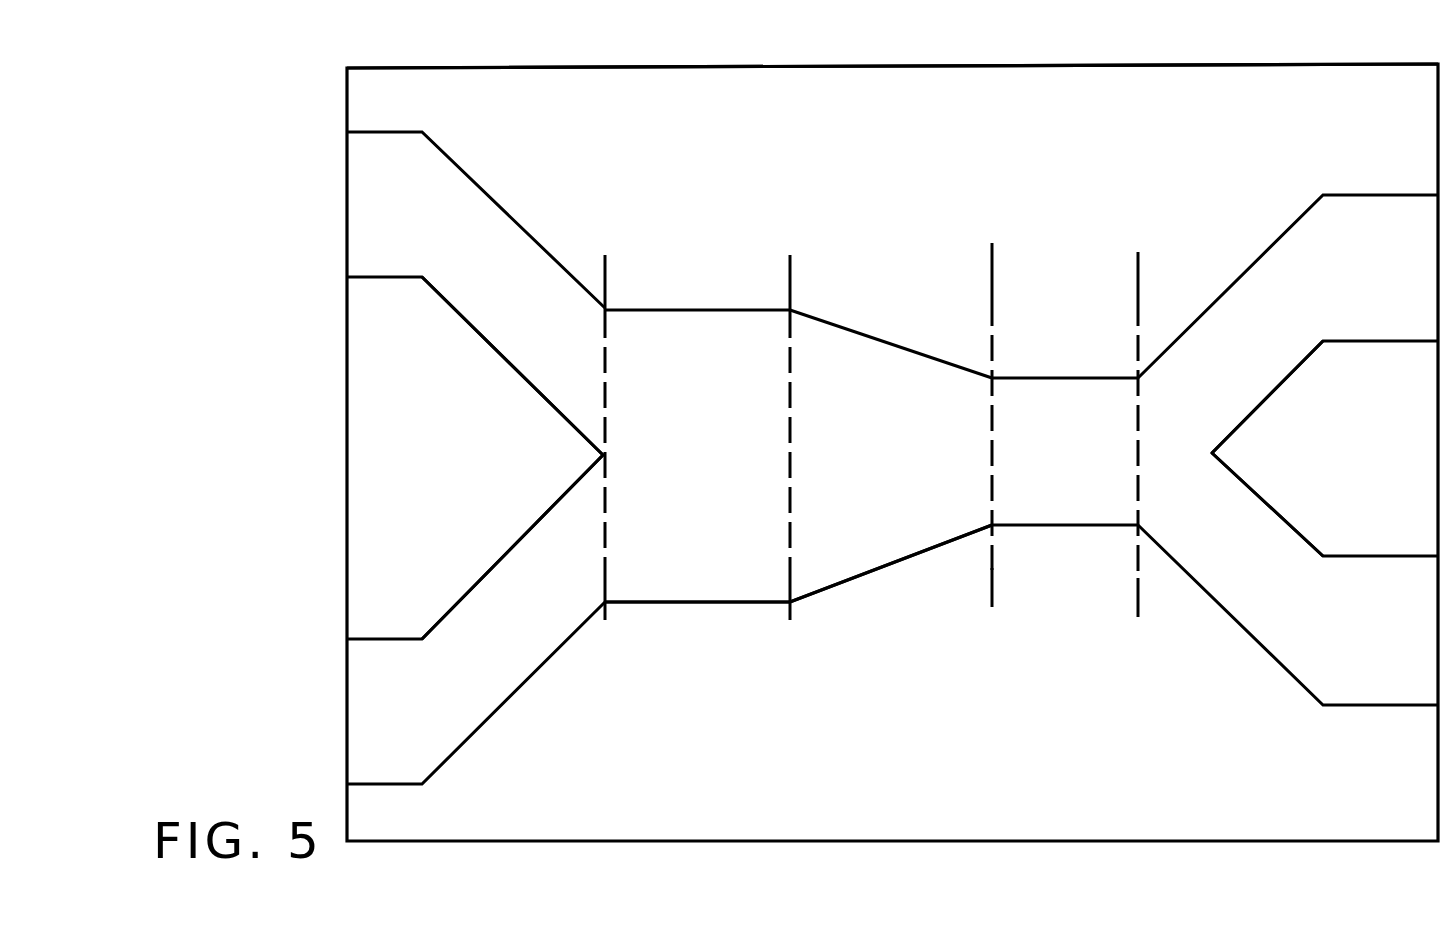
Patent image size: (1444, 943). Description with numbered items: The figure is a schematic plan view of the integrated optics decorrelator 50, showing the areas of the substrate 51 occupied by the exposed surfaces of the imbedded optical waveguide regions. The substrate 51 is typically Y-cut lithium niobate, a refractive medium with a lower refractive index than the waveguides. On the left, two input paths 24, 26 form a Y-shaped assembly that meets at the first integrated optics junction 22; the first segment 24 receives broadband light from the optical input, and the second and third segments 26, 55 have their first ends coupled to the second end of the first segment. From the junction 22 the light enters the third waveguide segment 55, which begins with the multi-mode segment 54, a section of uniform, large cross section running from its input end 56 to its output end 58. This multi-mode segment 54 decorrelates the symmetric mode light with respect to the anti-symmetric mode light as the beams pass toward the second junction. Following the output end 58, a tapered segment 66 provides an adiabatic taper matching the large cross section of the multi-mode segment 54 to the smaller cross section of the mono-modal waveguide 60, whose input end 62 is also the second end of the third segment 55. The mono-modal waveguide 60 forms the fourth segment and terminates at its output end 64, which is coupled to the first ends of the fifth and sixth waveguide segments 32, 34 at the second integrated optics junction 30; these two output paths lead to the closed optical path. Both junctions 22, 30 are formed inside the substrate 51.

The integrated optics decorrelator 50 is at (944, 61).
The substrate 51 is at (1294, 103).
The first integrated optics junction 22 is at (530, 459).
The input path 24 is at (476, 293).
The input path 26 is at (476, 619).
The second integrated optics junction 30 is at (1228, 455).
The fifth waveguide segment 32 is at (1288, 324).
The sixth waveguide segment 34 is at (1288, 579).
The multi-mode segment 54 is at (603, 238).
The third waveguide segment 55 is at (605, 653).
The input end of multi-mode segment 56 is at (606, 288).
The multimodal waveguide output end 58 is at (791, 300).
The mono-modal waveguide 60 is at (992, 238).
The mono-modal waveguide input end 62 is at (993, 572).
The mono-modal waveguide output end 64 is at (1137, 345).
The tapered segment 66 is at (992, 238).